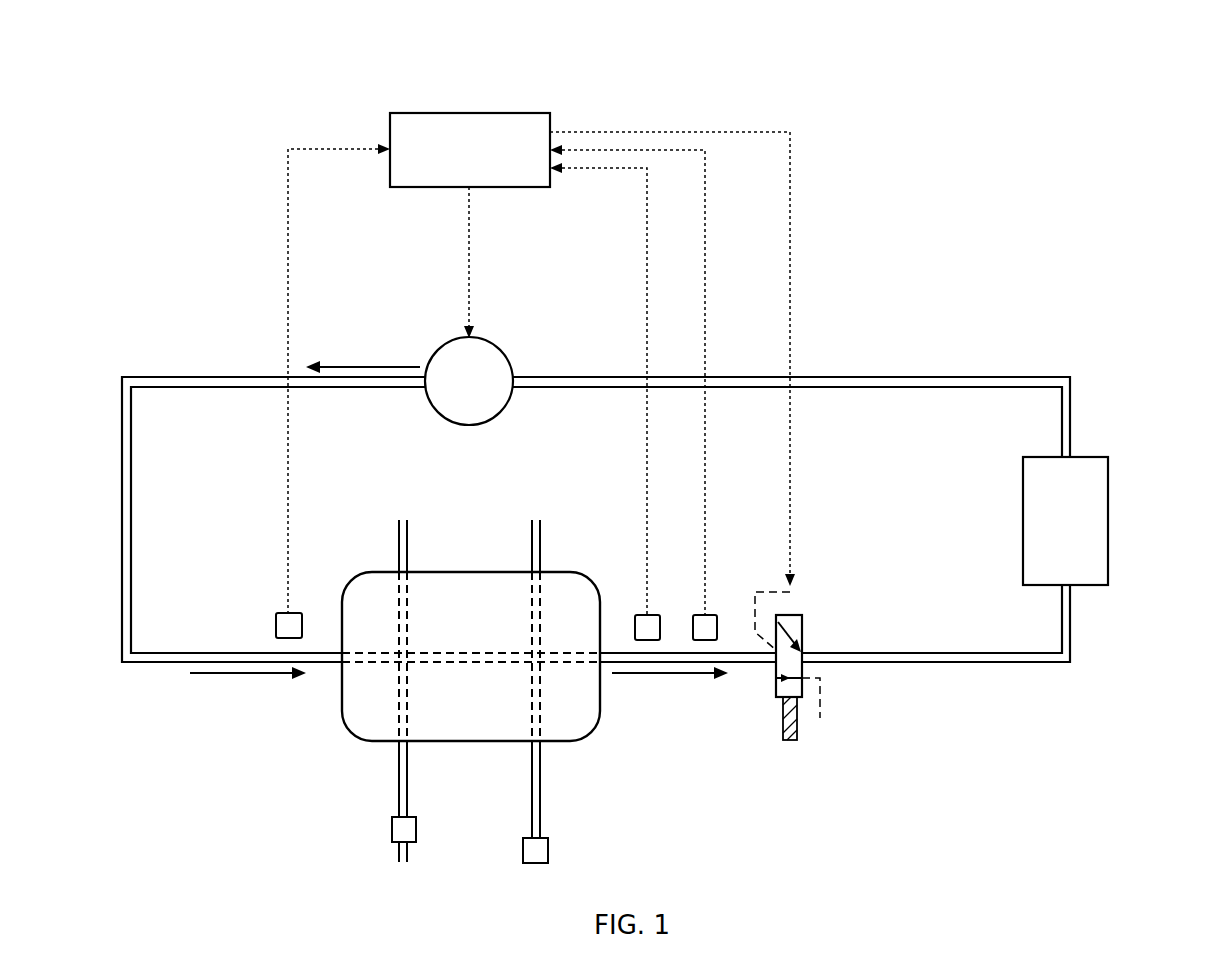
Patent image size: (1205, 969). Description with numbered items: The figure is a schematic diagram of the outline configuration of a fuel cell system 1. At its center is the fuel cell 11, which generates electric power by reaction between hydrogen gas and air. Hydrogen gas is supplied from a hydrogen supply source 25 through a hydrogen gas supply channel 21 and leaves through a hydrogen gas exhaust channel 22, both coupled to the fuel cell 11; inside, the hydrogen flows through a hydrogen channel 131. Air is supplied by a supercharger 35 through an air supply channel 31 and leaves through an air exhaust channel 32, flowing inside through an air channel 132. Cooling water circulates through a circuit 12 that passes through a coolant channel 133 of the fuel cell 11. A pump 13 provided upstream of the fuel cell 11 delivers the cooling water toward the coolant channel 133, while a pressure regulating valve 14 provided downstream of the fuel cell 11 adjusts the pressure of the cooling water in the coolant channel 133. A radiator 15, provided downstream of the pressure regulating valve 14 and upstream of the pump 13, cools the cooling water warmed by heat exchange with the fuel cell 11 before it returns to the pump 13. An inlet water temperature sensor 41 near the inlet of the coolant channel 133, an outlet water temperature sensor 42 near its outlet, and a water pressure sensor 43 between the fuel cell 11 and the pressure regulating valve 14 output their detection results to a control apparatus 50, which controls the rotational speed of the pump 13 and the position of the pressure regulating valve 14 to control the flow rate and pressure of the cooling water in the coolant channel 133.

The fuel cell system 1 is at (80, 42).
The fuel cell 11 is at (472, 742).
The circuit 12 is at (913, 377).
The pump 13 is at (485, 341).
The pressure regulating valve 14 is at (777, 690).
The radiator 15 is at (1108, 515).
The hydrogen gas supply channel 21 is at (541, 785).
The hydrogen gas exhaust channel 22 is at (541, 545).
The hydrogen supply source 25 is at (548, 850).
The air supply channel 31 is at (398, 775).
The air exhaust channel 32 is at (398, 545).
The supercharger 35 is at (392, 828).
The inlet water temperature sensor 41 is at (282, 612).
The outlet water temperature sensor 42 is at (655, 613).
The water pressure sensor 43 is at (710, 613).
The control apparatus 50 is at (467, 113).
The hydrogen channel 131 is at (542, 712).
The air channel 132 is at (400, 709).
The coolant channel 133 is at (468, 655).